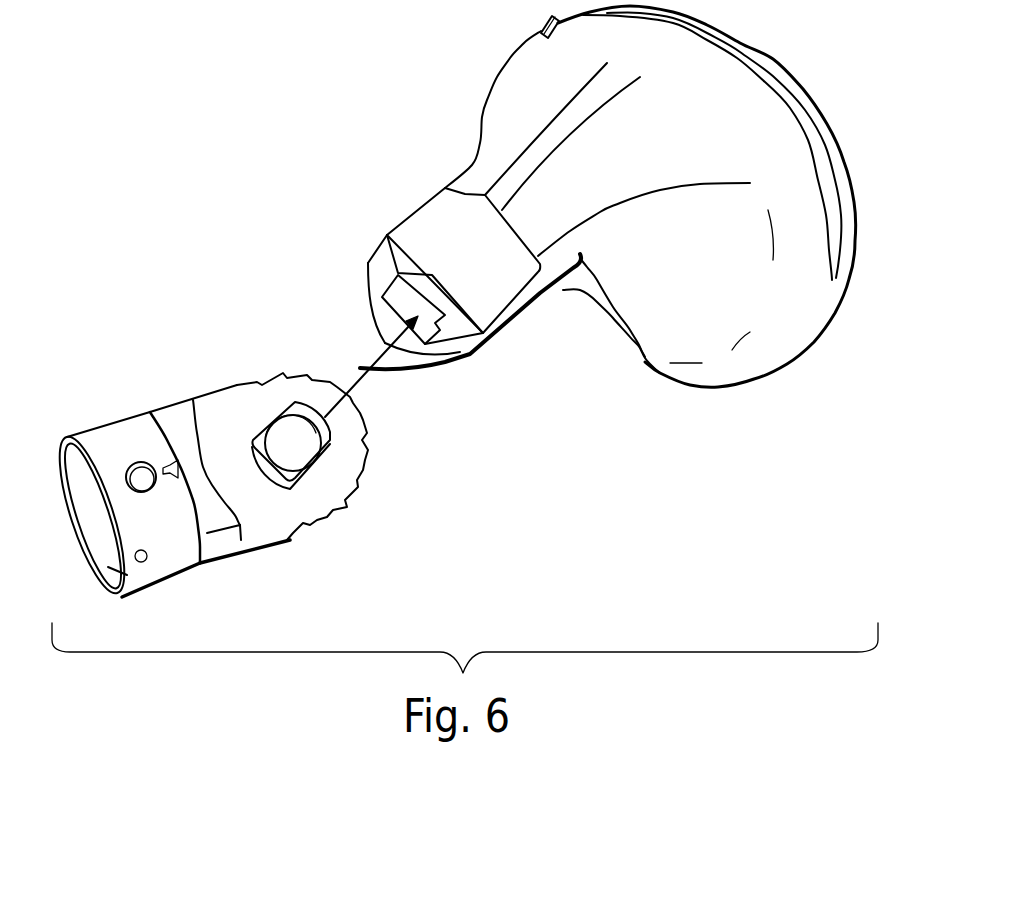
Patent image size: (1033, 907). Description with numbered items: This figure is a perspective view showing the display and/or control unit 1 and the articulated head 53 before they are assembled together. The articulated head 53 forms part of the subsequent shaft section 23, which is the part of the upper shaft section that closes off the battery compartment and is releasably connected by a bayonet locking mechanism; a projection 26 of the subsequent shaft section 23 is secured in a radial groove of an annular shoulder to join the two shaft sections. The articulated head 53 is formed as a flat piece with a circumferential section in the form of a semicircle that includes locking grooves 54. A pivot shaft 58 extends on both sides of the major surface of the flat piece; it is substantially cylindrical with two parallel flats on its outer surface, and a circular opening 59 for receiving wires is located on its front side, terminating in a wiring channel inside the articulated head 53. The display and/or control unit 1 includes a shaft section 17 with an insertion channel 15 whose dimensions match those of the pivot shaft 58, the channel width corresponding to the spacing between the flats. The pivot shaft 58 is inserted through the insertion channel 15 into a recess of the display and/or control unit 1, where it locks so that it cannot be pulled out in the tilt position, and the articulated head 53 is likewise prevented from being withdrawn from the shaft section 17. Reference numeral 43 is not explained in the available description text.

The display and/or control unit 1 is at (788, 345).
The insertion channel 15 is at (395, 305).
The shaft section 17 is at (423, 210).
The subsequent shaft section 23 is at (113, 430).
The projection 26 is at (142, 487).
The retaining band 43 is at (522, 318).
The articulated head 53 is at (288, 513).
The locking grooves 54 is at (362, 422).
The pivot shaft 58 is at (333, 437).
The circular opening 59 is at (282, 433).